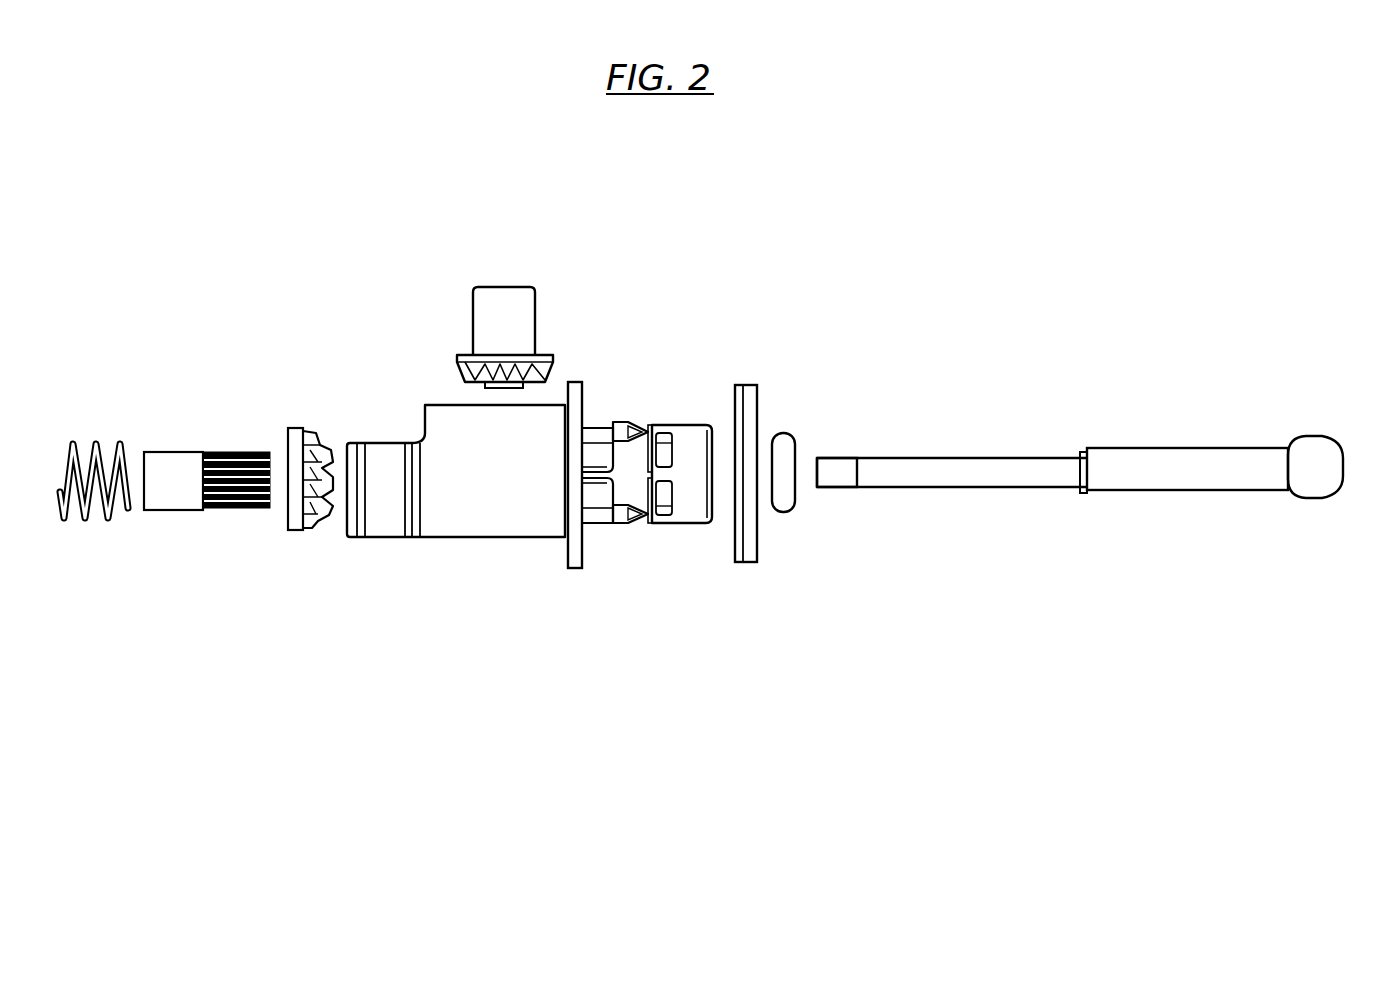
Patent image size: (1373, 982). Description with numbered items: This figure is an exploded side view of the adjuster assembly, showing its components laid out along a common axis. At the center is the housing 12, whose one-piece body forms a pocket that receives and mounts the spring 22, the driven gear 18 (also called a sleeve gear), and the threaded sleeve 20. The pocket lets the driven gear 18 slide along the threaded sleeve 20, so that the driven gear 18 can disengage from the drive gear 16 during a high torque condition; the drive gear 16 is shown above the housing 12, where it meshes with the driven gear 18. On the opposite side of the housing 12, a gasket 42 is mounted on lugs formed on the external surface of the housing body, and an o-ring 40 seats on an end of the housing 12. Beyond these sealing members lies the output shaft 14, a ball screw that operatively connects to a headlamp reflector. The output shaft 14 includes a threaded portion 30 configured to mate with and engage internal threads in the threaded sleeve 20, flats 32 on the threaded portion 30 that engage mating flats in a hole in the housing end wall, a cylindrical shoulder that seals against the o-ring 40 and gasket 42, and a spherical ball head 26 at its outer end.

The housing 12 is at (467, 537).
The output shaft 14 is at (1123, 448).
The drive gear 16 is at (535, 298).
The driven gear 18 is at (298, 428).
The threaded sleeve 20 is at (185, 452).
The spring 22 is at (70, 442).
The spherical ball head 26 is at (1312, 498).
The threaded portion 30 is at (953, 475).
The flats 32 is at (830, 458).
The o-ring 40 is at (787, 433).
The gasket 42 is at (752, 385).